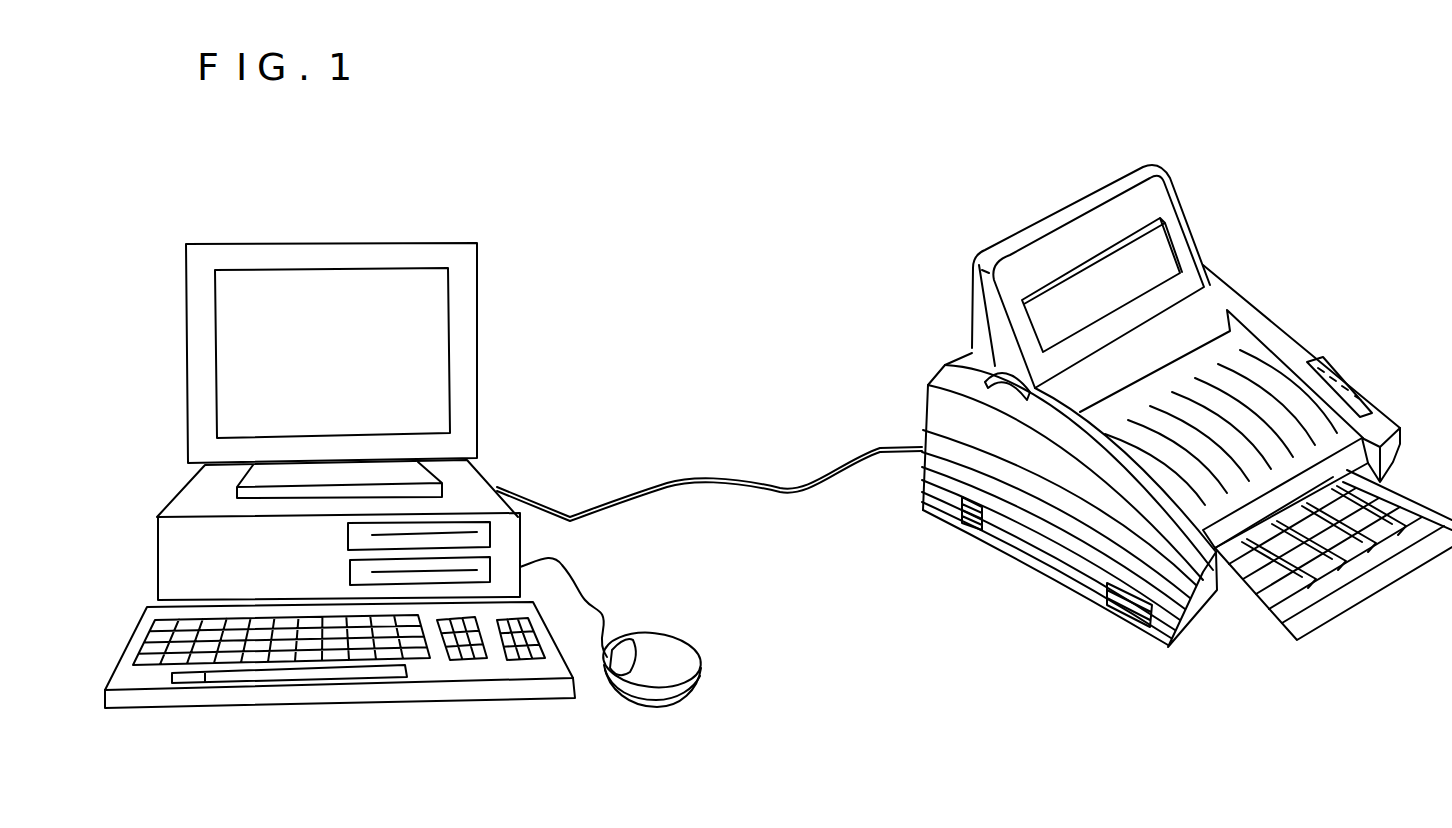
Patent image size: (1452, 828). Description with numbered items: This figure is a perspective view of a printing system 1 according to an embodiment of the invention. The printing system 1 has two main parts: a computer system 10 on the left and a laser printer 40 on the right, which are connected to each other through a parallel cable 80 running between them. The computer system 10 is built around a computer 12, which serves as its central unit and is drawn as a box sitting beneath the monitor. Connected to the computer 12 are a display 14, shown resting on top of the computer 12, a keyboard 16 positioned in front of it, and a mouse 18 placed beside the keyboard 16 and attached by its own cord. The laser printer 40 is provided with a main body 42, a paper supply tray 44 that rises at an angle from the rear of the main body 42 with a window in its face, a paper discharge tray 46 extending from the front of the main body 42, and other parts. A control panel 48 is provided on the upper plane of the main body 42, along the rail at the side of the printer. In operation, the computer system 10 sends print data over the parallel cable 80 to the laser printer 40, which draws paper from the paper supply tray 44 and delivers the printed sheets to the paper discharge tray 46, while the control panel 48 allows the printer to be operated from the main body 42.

The printing system 1 is at (610, 183).
The computer system 10 is at (445, 223).
The computer 12 is at (468, 492).
The display 14 is at (359, 370).
The keyboard 16 is at (528, 674).
The mouse 18 is at (673, 650).
The laser printer 40 is at (842, 228).
The main body 42 is at (1028, 557).
The paper supply tray 44 is at (1096, 217).
The paper discharge tray 46 is at (1300, 613).
The control panel 48 is at (1328, 362).
The parallel cable 80 is at (730, 478).